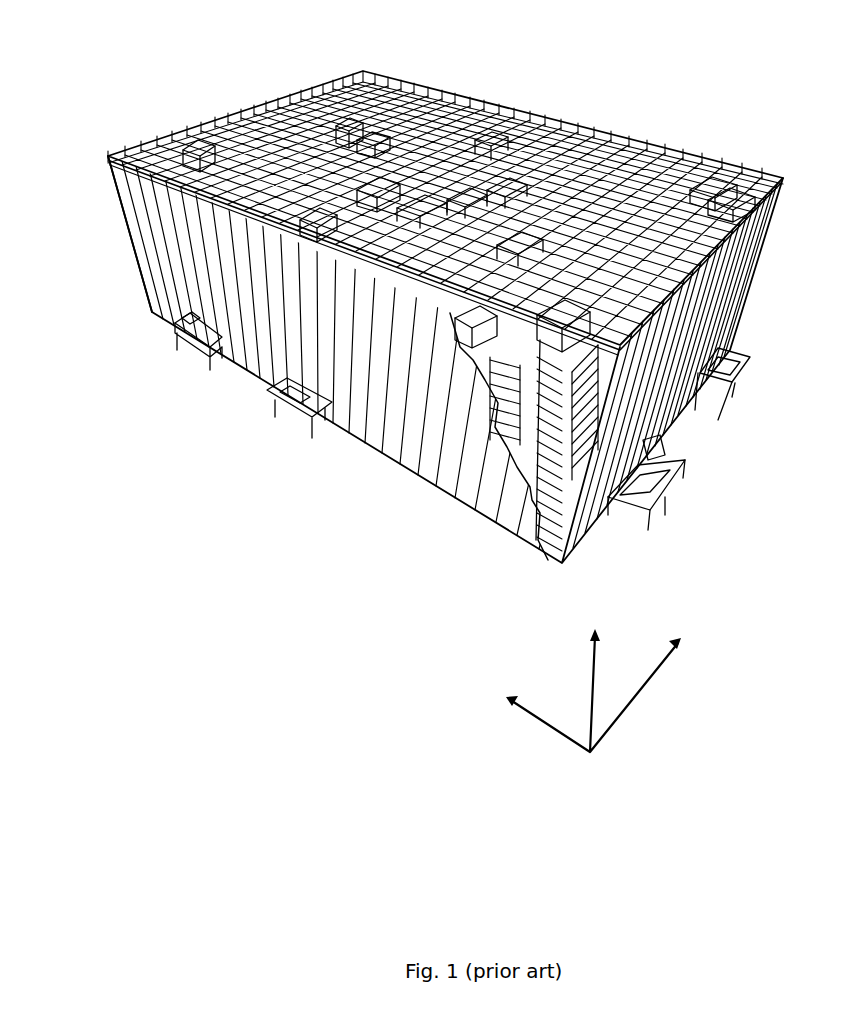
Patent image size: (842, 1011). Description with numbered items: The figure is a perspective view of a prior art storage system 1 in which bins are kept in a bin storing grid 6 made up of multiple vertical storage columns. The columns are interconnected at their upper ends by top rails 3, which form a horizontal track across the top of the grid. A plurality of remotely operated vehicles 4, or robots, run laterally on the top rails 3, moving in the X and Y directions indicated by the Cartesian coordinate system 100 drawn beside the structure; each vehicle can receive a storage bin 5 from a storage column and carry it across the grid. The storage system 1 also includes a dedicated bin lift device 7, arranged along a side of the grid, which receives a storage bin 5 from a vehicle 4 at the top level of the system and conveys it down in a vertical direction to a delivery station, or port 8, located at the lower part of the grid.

The storage system 1 is at (96, 92).
The top rails 3 is at (610, 182).
The remotely operated vehicles 4 is at (383, 183).
The storage bin 5 is at (549, 508).
The bin storing grid 6 is at (100, 267).
The bin lift device 7 is at (284, 344).
The port 8 is at (303, 405).
The Cartesian coordinate system 100 is at (435, 648).